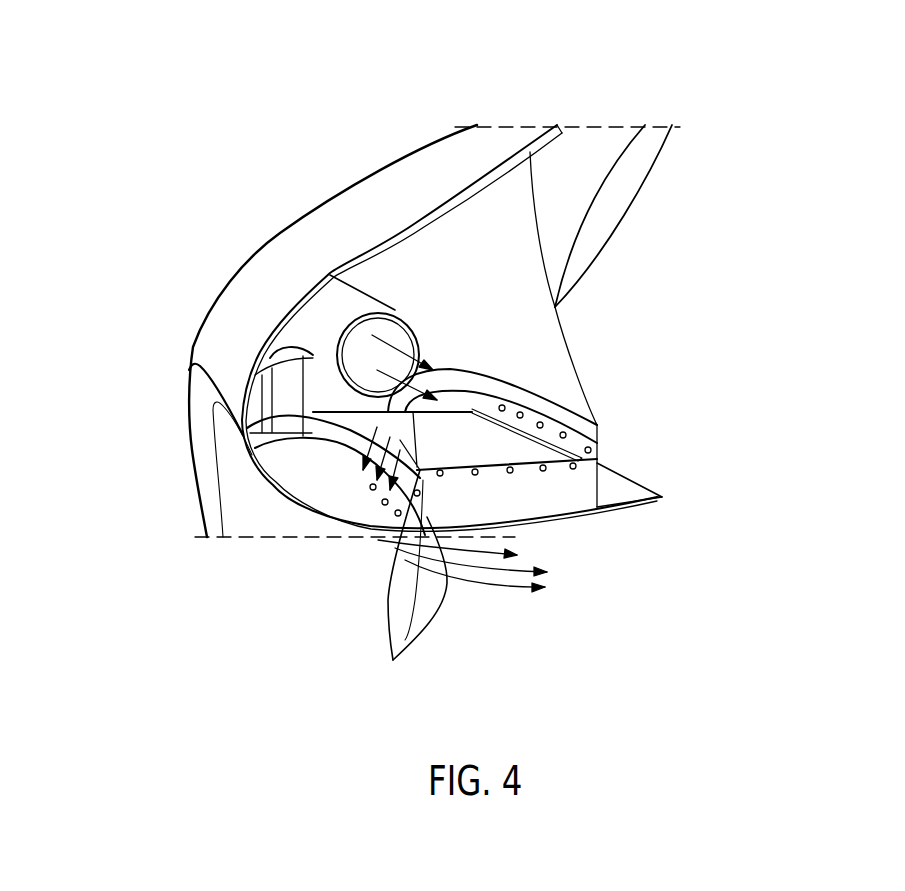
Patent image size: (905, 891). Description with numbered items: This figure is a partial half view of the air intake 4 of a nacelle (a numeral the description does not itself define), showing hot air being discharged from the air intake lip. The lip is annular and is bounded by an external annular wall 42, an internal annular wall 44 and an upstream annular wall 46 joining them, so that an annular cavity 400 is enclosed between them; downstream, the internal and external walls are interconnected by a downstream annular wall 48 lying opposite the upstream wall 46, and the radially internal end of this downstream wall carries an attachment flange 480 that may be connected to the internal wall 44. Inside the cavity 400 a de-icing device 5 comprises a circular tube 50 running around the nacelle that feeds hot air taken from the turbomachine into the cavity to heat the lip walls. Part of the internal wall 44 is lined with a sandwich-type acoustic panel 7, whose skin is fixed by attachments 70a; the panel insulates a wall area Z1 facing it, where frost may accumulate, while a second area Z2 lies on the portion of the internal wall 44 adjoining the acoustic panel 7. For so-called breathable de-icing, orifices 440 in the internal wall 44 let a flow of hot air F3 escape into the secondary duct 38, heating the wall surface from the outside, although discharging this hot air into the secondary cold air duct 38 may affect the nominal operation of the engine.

The nacelle cowl 4 is at (380, 197).
The de-icing device 5 is at (333, 307).
The external annular wall 42 is at (480, 145).
The downstream annular wall 48 is at (520, 289).
The annular cavity 400 is at (500, 279).
The circular tube 50 is at (313, 340).
The upstream annular wall 46 is at (207, 380).
The attachments 70a is at (547, 462).
The acoustic panel 7 is at (597, 427).
The attachment flange 480 is at (607, 517).
The internal annular wall 44 is at (637, 503).
The wall area Z1 is at (557, 530).
The second area Z2 is at (533, 383).
The orifices 440 is at (395, 522).
The flow of hot air F3 is at (417, 593).
The secondary duct 38 is at (535, 663).